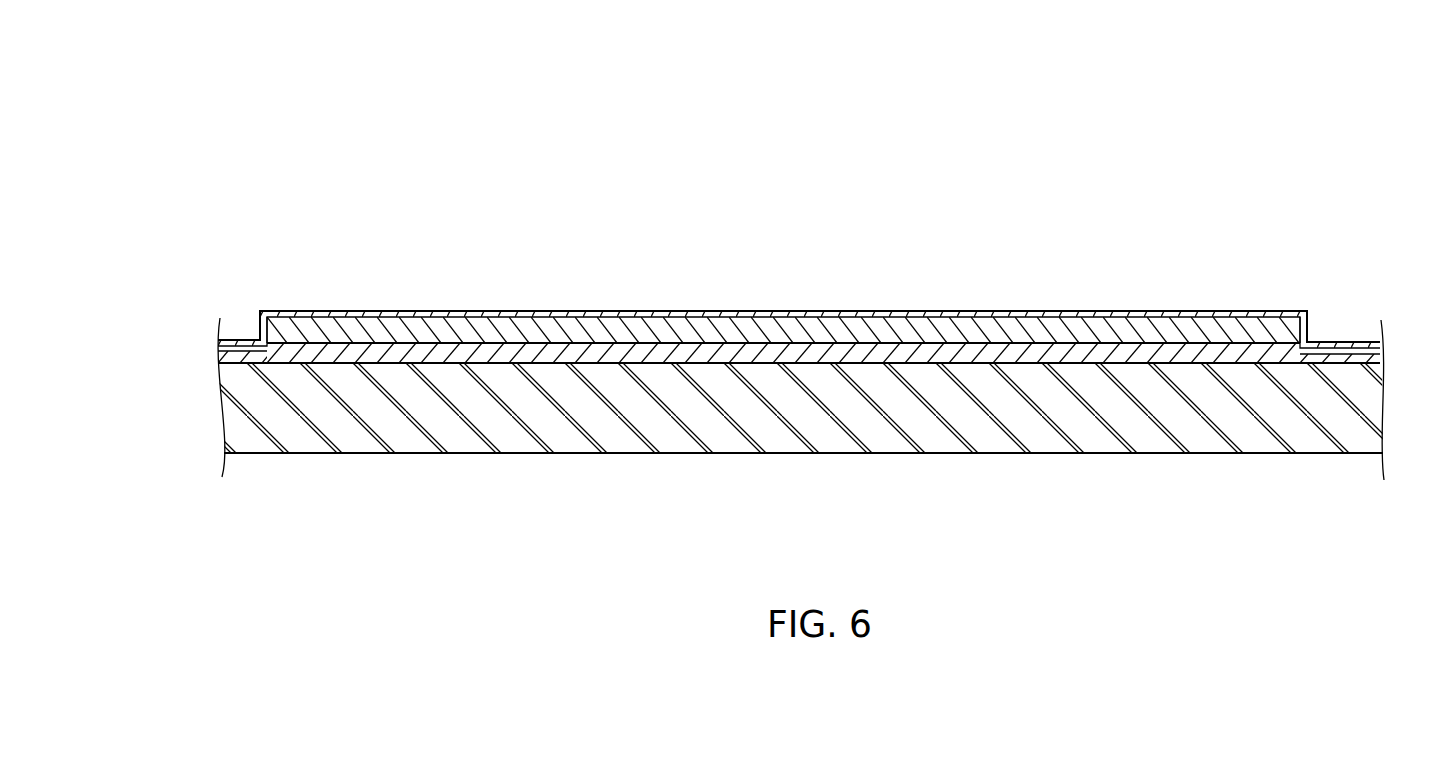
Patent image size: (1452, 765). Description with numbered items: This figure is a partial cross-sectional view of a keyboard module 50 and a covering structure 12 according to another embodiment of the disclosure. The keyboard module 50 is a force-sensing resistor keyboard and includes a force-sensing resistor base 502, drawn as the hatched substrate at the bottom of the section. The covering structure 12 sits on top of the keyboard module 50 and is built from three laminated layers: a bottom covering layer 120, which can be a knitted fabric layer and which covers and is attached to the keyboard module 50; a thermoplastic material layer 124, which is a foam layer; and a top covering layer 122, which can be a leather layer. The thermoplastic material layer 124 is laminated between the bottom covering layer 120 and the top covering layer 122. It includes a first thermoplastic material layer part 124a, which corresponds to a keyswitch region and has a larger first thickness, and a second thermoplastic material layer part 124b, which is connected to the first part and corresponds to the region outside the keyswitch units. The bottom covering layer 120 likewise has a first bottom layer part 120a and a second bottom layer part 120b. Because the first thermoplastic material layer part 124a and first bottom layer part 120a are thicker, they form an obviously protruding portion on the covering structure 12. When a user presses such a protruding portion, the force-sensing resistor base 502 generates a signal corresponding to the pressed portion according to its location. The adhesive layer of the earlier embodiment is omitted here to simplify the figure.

The covering structure 12 is at (1400, 105).
The top covering layer 122 is at (907, 317).
The thermoplastic material layer 124 is at (1263, 157).
The first thermoplastic material layer part 124a is at (1194, 330).
The second thermoplastic material layer part 124b is at (1322, 343).
The bottom covering layer 120 is at (1440, 157).
The first bottom layer part 120a is at (1330, 378).
The second bottom layer part 120b is at (1365, 366).
The keyboard module 50 is at (216, 423).
The force-sensing resistor base 502 is at (1217, 438).